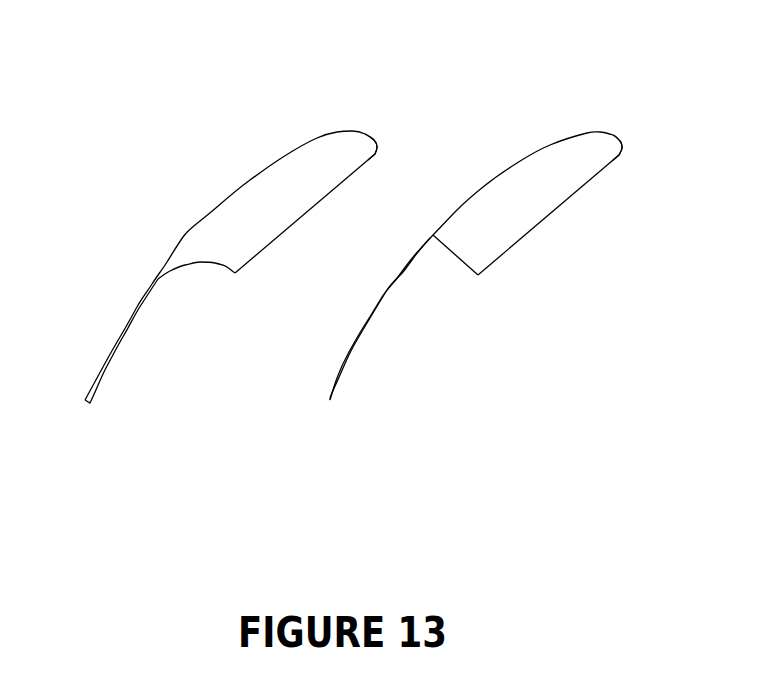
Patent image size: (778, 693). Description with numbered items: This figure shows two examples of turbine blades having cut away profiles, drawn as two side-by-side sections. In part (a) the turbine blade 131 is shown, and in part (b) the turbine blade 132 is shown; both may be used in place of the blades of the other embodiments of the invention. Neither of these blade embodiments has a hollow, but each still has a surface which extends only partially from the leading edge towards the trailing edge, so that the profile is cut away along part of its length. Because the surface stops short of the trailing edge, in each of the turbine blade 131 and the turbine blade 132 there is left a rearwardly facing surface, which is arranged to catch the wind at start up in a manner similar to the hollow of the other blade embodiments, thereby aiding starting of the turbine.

The turbine blade 131 is at (153, 195).
The turbine blade 132 is at (562, 130).